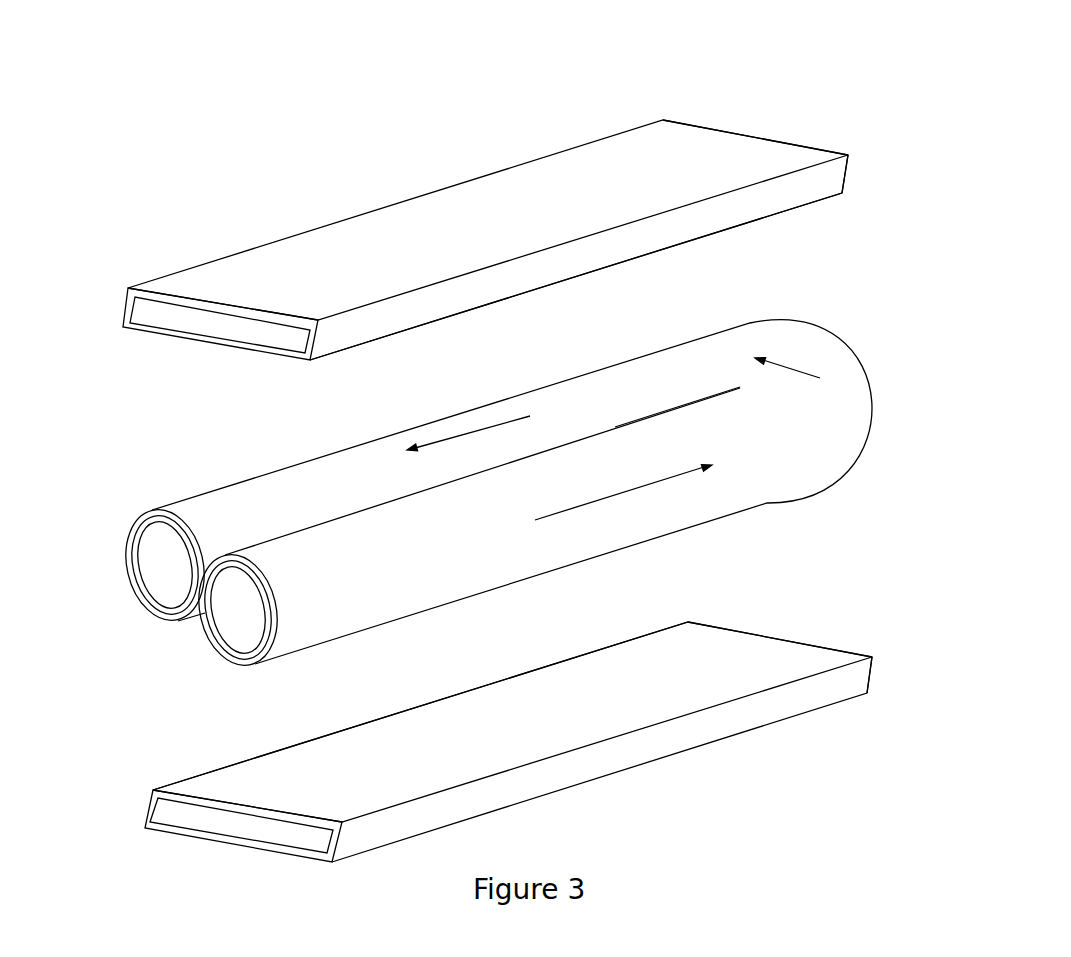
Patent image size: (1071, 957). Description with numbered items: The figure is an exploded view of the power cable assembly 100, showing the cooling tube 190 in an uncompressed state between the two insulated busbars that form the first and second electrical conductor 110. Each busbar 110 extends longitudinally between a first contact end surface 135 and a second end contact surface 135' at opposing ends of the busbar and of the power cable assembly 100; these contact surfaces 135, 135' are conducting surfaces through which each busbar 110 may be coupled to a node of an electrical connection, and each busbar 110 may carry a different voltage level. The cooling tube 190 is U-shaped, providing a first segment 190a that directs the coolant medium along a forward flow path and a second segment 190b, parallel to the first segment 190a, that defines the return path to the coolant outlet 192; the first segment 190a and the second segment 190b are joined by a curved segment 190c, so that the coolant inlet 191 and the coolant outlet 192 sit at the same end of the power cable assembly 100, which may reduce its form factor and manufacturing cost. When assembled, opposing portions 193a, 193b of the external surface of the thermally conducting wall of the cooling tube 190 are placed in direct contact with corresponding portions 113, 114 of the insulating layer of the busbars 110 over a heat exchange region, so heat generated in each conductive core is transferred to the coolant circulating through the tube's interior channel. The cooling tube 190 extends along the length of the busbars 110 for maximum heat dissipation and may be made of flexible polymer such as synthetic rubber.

The power cable assembly 100 is at (253, 58).
The electrical conductor 110 is at (240, 252).
The portion of the insulating layer 113 is at (272, 355).
The portion of the insulating layer 114 is at (263, 772).
The first contact end surface 135 is at (195, 543).
The second end contact surface 135' is at (735, 379).
The cooling tube 190 is at (548, 590).
The first segment 190a is at (630, 505).
The second segment 190b is at (568, 400).
The curved segment 190c is at (807, 338).
The coolant inlet 191 is at (240, 628).
The coolant outlet 192 is at (165, 585).
The portion of the external surface 193a is at (338, 513).
The portion of the external surface 193b is at (275, 663).